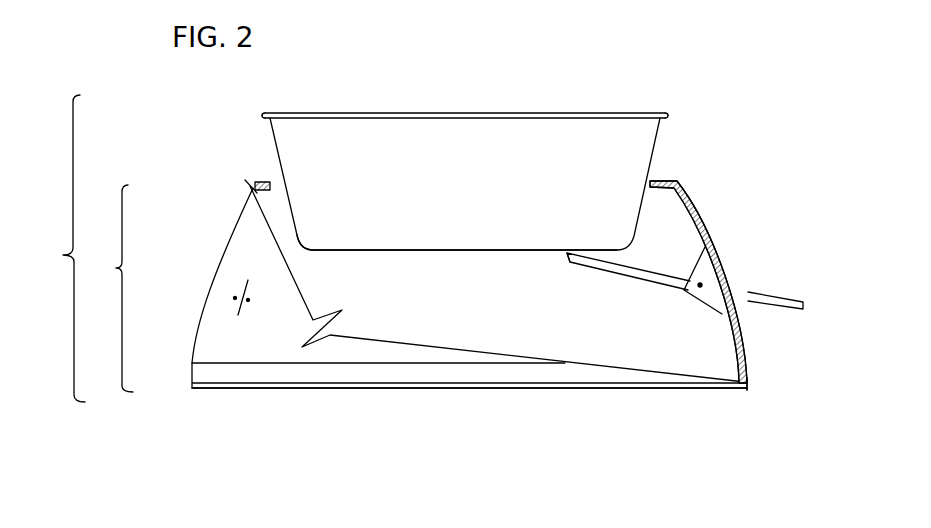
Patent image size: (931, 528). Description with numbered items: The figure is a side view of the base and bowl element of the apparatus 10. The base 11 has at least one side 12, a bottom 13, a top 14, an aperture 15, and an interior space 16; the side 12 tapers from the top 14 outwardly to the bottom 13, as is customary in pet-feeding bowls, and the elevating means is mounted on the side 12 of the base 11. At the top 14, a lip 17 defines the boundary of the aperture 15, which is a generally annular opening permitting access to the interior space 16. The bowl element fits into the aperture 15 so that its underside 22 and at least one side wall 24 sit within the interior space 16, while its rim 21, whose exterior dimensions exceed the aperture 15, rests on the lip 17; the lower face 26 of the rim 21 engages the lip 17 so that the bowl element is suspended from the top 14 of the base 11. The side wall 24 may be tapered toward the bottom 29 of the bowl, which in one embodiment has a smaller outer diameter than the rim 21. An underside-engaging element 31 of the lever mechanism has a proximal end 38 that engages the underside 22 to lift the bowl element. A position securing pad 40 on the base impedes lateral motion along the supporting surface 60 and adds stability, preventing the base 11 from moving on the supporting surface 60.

The apparatus 10 is at (56, 248).
The base 11 is at (115, 288).
The side 12 is at (220, 262).
The bottom 13 is at (207, 372).
The top 14 is at (239, 186).
The aperture 15 is at (652, 174).
The interior space 16 is at (470, 318).
The lip 17 is at (265, 172).
The rim 21 is at (262, 116).
The underside 22 is at (440, 250).
The side wall 24 is at (460, 211).
The lower face 26 is at (262, 121).
The bottom 29 is at (325, 242).
The underside-engaging element 31 is at (574, 263).
The proximal end 38 is at (600, 258).
The position securing pad 40 is at (193, 388).
The supporting surface 60 is at (778, 390).